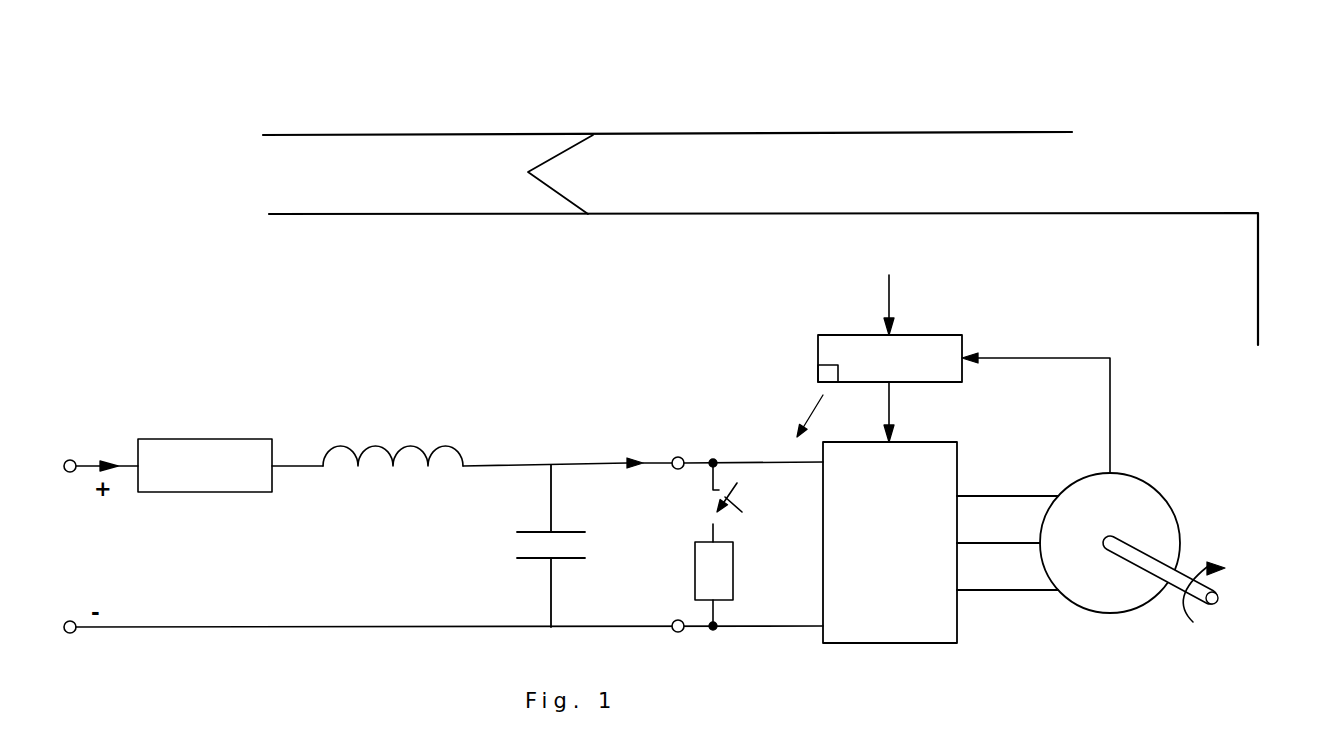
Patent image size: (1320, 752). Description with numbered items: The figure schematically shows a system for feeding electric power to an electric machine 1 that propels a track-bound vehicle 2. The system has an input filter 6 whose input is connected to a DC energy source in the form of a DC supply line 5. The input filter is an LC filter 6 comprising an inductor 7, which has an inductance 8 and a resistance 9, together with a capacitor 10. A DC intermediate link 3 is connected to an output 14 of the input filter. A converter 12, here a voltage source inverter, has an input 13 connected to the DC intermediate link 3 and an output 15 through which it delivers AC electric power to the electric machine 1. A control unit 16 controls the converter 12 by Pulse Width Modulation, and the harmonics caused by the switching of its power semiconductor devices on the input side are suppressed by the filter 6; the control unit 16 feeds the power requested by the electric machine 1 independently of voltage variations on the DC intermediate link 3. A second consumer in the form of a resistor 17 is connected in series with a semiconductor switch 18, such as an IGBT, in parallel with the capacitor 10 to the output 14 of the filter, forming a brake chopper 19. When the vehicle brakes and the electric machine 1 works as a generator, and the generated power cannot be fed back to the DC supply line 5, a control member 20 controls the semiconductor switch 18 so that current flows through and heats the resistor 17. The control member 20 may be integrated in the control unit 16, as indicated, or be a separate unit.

The electric machine 1 is at (1145, 478).
The track-bound vehicle 2 is at (1258, 230).
The DC intermediate link 3 is at (692, 450).
The DC supply line 5 is at (750, 132).
The input filter 6 is at (532, 444).
The inductor 7 is at (378, 502).
The inductance 8 is at (377, 444).
The resistance 9 is at (203, 439).
The capacitor 10 is at (523, 545).
The converter 12 is at (957, 467).
The input 13 is at (762, 463).
The output 14 is at (677, 457).
The output 15 is at (997, 590).
The control unit 16 is at (910, 335).
The resistor 17 is at (733, 577).
The semiconductor switch 18 is at (738, 499).
The brake chopper 19 is at (683, 531).
The control member 20 is at (827, 370).